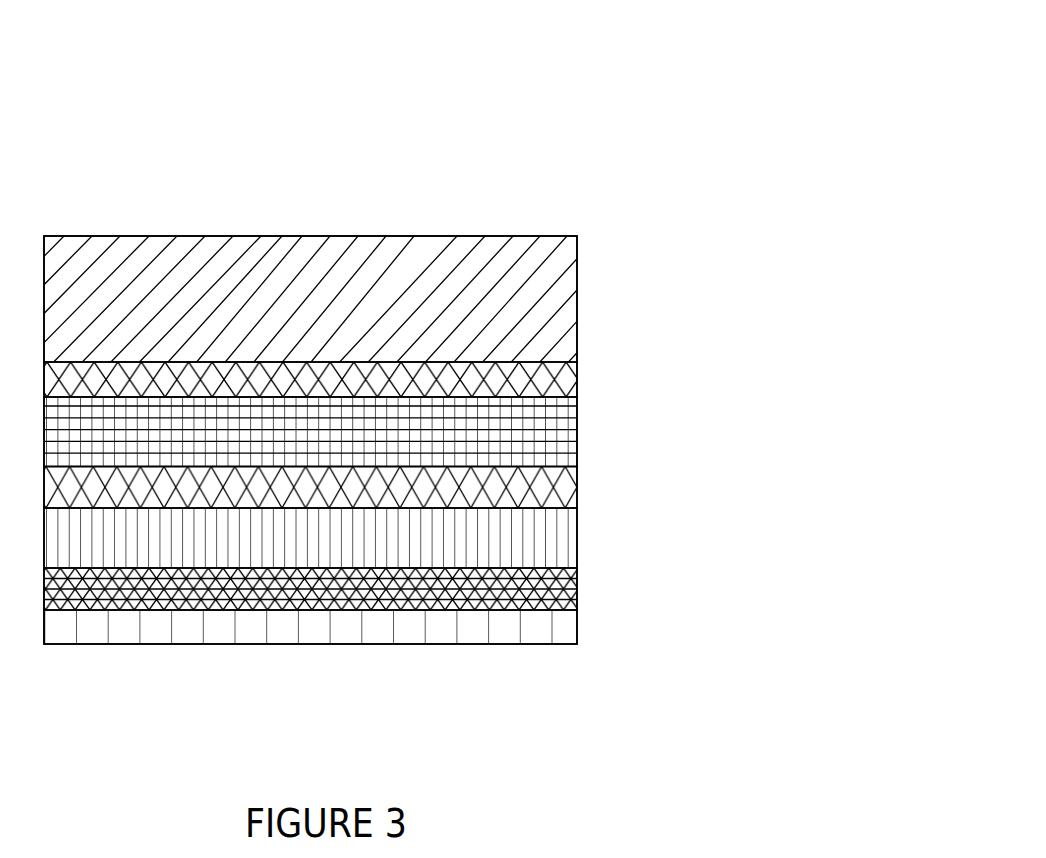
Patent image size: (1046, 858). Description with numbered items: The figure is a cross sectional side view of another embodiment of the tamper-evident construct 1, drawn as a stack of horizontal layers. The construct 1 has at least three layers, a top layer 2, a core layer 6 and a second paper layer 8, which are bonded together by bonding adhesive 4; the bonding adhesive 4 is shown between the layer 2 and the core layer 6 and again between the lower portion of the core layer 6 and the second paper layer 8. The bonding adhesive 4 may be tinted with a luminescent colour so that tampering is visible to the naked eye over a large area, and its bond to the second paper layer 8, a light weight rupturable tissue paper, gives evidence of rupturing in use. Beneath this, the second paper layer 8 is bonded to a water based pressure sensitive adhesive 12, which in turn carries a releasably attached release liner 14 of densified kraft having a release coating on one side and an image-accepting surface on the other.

The construct 1 is at (397, 154).
The layer 2 is at (532, 303).
The bonding adhesive 4 is at (532, 379).
The core layer 6 is at (532, 437).
The second paper layer 8 is at (532, 539).
The pressure sensitive adhesive 12 is at (532, 585).
The release liner 14 is at (532, 626).